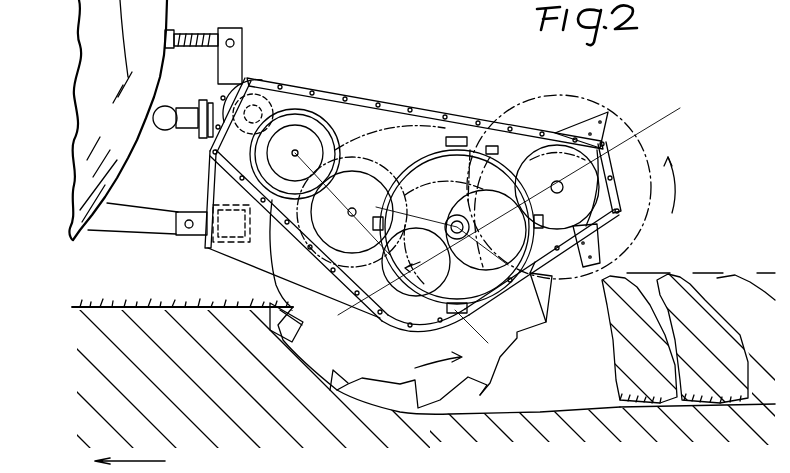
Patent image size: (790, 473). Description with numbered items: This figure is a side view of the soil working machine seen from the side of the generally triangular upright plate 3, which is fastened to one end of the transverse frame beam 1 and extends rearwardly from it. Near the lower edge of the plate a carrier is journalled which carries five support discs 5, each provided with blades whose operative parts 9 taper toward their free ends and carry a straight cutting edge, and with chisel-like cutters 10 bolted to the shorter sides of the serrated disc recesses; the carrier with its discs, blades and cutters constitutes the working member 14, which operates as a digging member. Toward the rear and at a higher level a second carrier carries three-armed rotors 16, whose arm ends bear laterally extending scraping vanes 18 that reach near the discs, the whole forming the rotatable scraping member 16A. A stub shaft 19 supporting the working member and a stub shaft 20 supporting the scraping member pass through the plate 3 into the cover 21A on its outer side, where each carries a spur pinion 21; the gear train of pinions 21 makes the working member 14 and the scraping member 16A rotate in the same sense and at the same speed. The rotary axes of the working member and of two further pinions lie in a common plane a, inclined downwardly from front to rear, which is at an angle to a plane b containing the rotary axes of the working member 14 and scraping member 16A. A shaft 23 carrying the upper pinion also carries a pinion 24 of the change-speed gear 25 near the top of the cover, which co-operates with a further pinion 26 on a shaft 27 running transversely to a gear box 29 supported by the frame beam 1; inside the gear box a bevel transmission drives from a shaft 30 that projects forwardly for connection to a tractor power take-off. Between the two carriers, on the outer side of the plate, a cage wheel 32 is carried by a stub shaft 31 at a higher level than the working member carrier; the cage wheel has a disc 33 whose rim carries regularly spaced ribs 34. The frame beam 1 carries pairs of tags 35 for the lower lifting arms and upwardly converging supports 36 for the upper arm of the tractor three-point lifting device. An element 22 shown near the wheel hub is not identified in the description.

The frame beam 1 is at (215, 255).
The upright plate 3 is at (247, 270).
The support disc 5 is at (500, 357).
The operative part 9 is at (550, 293).
The cutter 10 is at (407, 382).
The working member 14 is at (514, 371).
The rotor 16 is at (597, 242).
The scraping member 16A is at (627, 90).
The scraping vane 18 is at (617, 118).
The stub shaft 19 is at (437, 258).
The stub shaft 20 is at (563, 177).
The spur pinion 21 is at (343, 87).
The cover 21A is at (425, 117).
The main drum 22 is at (478, 240).
The shaft 23 is at (333, 152).
The pinion 24 is at (325, 133).
The change-speed gear 25 is at (325, 88).
The further pinion 26 is at (272, 86).
The shaft 27 is at (208, 148).
The gear box 29 is at (210, 100).
The shaft 30 is at (197, 100).
The stub shaft 31 is at (452, 285).
The cage wheel 32 is at (487, 305).
The disc 33 is at (492, 146).
The rib 34 is at (456, 136).
The tag 35 is at (200, 210).
The support 36 is at (240, 70).
The plane a is at (473, 330).
The plane b is at (680, 108).